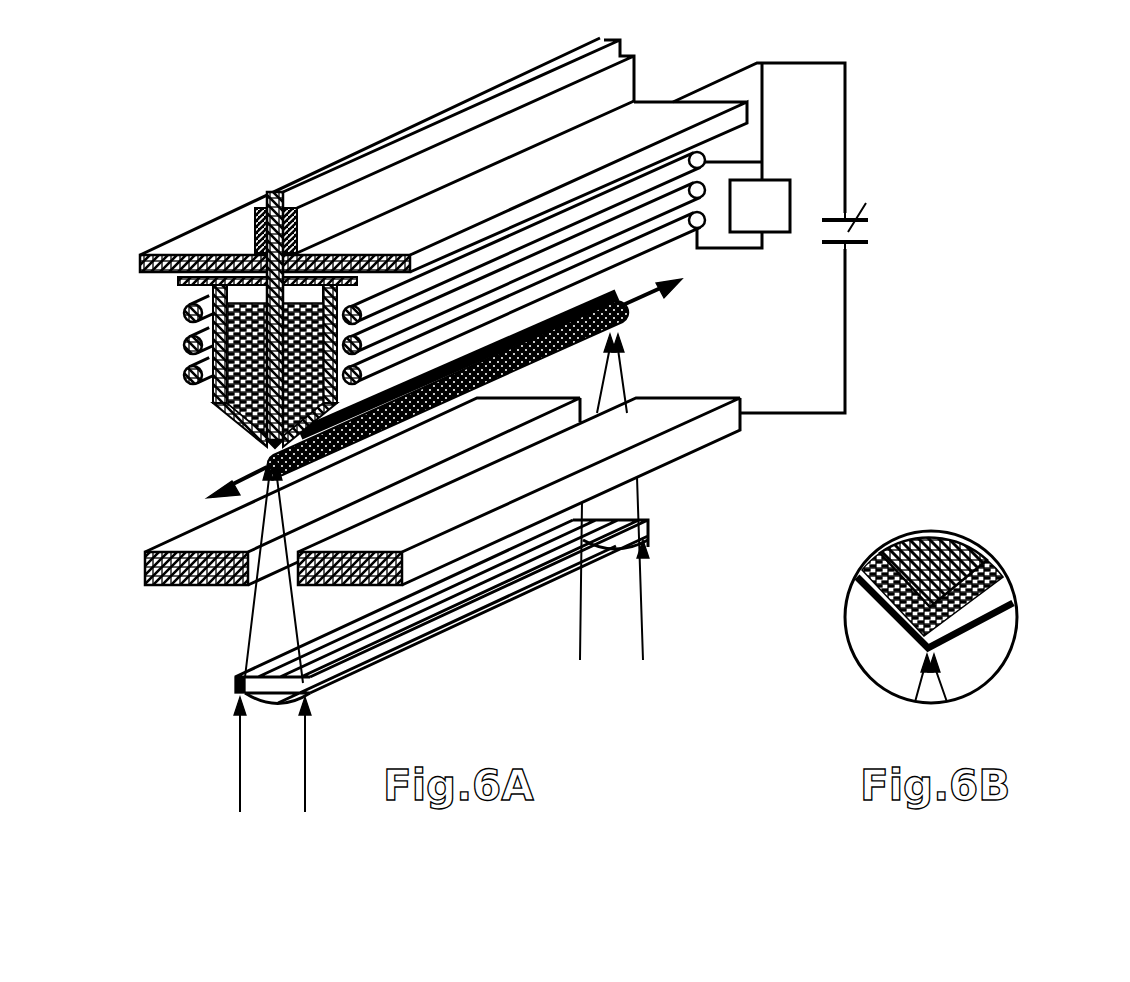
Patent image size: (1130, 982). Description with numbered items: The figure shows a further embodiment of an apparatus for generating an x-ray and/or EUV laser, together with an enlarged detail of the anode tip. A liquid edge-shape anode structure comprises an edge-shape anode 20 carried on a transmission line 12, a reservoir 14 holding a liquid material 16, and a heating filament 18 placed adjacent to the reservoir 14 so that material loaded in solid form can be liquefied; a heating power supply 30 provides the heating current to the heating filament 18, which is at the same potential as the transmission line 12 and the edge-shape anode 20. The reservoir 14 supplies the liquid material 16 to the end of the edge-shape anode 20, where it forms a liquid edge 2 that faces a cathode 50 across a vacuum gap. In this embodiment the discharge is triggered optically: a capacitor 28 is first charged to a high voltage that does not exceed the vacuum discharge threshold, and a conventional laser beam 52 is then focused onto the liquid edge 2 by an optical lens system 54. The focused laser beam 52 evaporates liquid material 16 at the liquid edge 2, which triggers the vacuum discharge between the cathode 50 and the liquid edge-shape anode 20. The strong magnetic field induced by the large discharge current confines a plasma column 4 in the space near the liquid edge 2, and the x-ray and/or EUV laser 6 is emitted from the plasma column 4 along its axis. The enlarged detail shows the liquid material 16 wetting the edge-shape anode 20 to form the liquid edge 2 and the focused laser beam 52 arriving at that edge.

In FIG. 6A, the liquid edge 2 is at (444, 244).
In FIG. 6B, the liquid edge 2 is at (927, 633).
In FIG. 6A, the plasma column 4 is at (267, 456).
In FIG. 6A, the x-ray and/or EUV laser 6 is at (652, 292).
In FIG. 6A, the transmission line 12 is at (140, 266).
In FIG. 6A, the reservoir 14 is at (212, 294).
In FIG. 6A, the liquid material 16 is at (212, 332).
In FIG. 6A, the heating filament 18 is at (185, 377).
In FIG. 6A, the edge-shape anode 20 is at (233, 420).
In FIG. 6B, the edge-shape anode 20 is at (957, 563).
In FIG. 6A, the capacitor 28 is at (857, 214).
In FIG. 6A, the heating power supply 30 is at (760, 206).
In FIG. 6A, the cathode 50 is at (145, 567).
In FIG. 6A, the focused laser beam 52 is at (257, 633).
In FIG. 6B, the focused laser beam 52 is at (925, 683).
In FIG. 6A, the optical lens system 54 is at (235, 685).